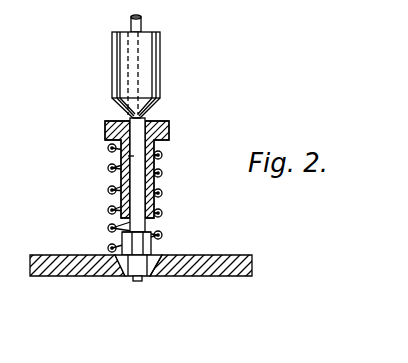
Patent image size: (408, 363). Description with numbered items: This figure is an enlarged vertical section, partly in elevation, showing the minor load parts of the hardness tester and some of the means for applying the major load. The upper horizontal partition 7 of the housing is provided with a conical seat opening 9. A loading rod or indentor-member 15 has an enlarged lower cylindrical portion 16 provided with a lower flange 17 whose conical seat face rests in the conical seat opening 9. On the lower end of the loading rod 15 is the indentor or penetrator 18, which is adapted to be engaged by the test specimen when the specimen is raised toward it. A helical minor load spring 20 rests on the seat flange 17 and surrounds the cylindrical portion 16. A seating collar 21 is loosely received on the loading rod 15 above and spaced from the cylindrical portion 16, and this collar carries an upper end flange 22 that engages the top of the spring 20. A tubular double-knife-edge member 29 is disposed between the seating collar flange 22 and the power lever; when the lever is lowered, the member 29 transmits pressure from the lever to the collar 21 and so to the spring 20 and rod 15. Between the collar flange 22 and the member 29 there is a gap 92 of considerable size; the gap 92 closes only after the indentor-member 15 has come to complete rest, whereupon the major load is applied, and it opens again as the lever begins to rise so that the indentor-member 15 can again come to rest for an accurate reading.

The tubular double-knife-edge member 29 is at (112, 86).
The upper end flange 22 is at (169, 137).
The loading rod 15 is at (122, 156).
The seating collar 21 is at (162, 166).
The helical minor load spring 20 is at (109, 187).
The gap 92 is at (158, 224).
The enlarged lower cylindrical portion 16 is at (158, 243).
The upper horizontal partition 7 is at (95, 276).
The lower flange 17 is at (123, 278).
The indentor 18 is at (137, 282).
The conical seat opening 9 is at (155, 277).